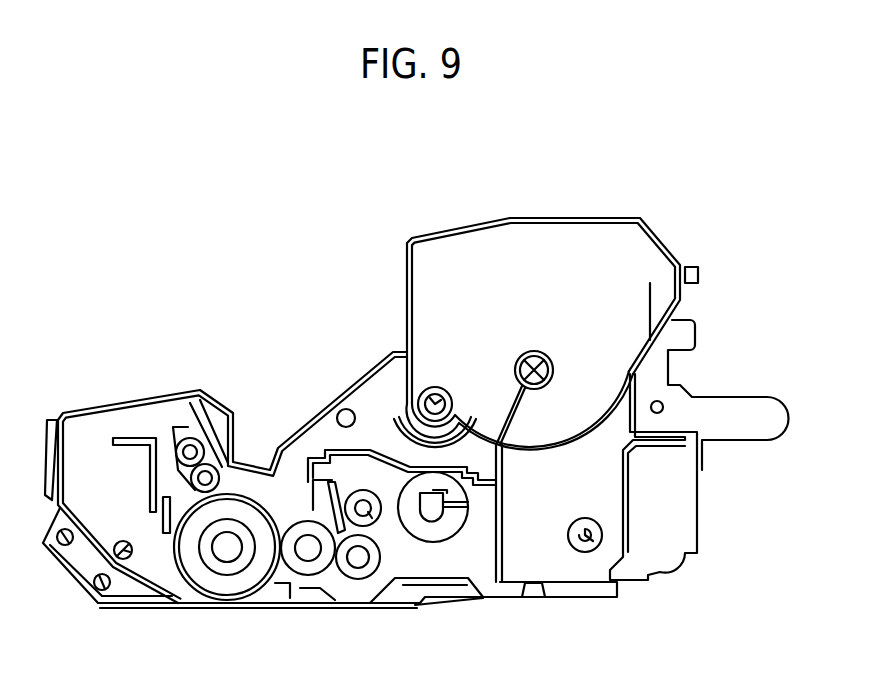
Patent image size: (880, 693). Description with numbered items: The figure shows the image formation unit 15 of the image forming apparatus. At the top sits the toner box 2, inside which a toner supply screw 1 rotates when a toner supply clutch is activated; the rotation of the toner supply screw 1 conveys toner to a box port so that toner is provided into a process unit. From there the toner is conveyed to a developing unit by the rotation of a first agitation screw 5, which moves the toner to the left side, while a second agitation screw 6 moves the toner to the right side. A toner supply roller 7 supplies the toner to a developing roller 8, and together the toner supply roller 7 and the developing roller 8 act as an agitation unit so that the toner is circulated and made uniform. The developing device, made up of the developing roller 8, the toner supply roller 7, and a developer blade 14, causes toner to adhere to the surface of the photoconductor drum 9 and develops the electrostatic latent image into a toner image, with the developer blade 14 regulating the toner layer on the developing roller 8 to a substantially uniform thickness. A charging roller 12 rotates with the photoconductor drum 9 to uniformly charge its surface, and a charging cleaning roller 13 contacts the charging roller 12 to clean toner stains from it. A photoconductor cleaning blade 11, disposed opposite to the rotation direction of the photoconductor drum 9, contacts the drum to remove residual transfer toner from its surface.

The toner supply screw 1 is at (436, 386).
The toner box 2 is at (592, 258).
The first agitation screw 5 is at (466, 540).
The second agitation screw 6 is at (378, 520).
The toner supply roller 7 is at (356, 586).
The developing roller 8 is at (299, 586).
The photoconductor drum 9 is at (252, 599).
The photoconductor cleaning blade 11 is at (152, 499).
The charging roller 12 is at (226, 468).
The charging cleaning roller 13 is at (210, 438).
The developer blade 14 is at (328, 516).
The image formation unit 15 is at (222, 212).